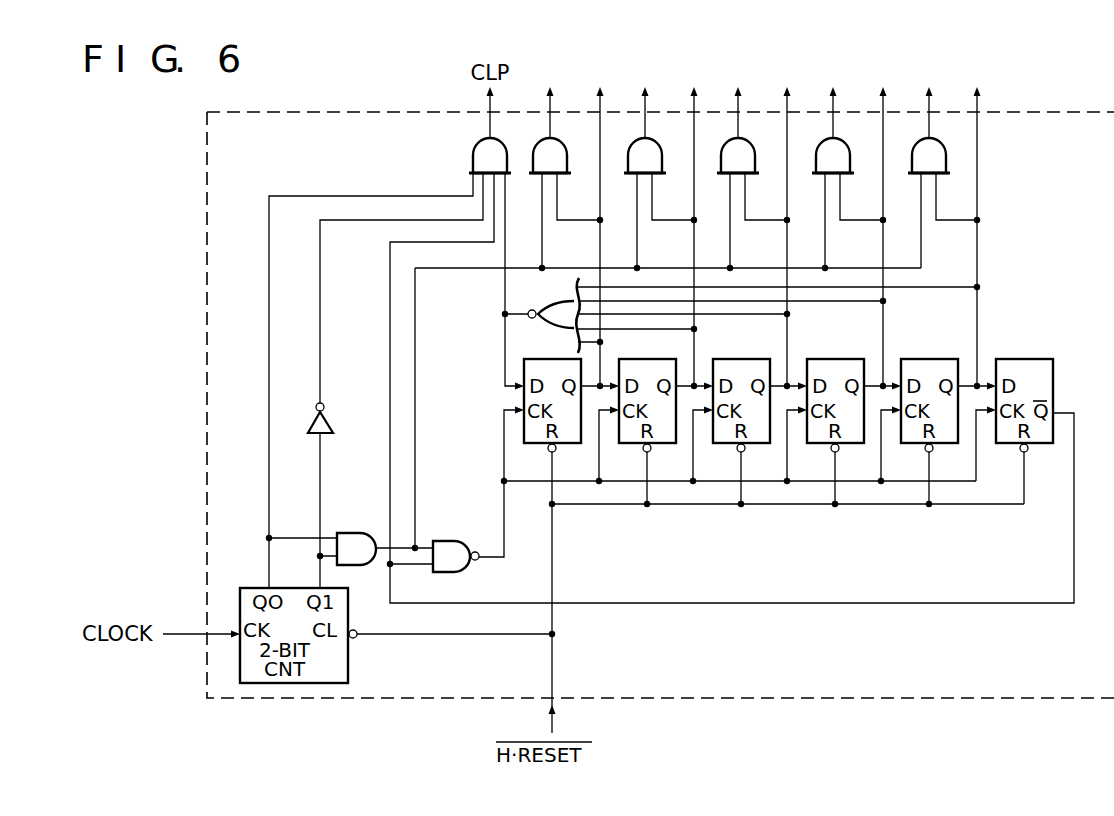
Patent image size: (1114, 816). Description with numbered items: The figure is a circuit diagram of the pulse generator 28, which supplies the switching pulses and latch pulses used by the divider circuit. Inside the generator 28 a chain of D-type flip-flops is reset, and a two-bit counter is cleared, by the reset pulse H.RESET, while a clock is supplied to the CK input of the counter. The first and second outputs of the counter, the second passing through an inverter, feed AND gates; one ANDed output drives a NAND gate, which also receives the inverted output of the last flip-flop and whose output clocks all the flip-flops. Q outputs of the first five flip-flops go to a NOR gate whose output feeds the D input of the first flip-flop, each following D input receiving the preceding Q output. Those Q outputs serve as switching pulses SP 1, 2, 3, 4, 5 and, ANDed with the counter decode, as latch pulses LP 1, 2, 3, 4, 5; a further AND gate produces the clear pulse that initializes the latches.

The pulse generator 28 is at (1078, 117).
The first stage flip-flop with LP1 AND gate and SP1 output 1 is at (572, 252).
The second stage flip-flop with LP2 AND gate and SP2 output 2 is at (665, 252).
The third stage flip-flop with LP3 AND gate and SP3 output 3 is at (760, 252).
The fourth stage flip-flop with LP4 AND gate and SP4 output 4 is at (856, 252).
The fifth stage flip-flop with LP5 AND gate and SP5 output 5 is at (952, 252).